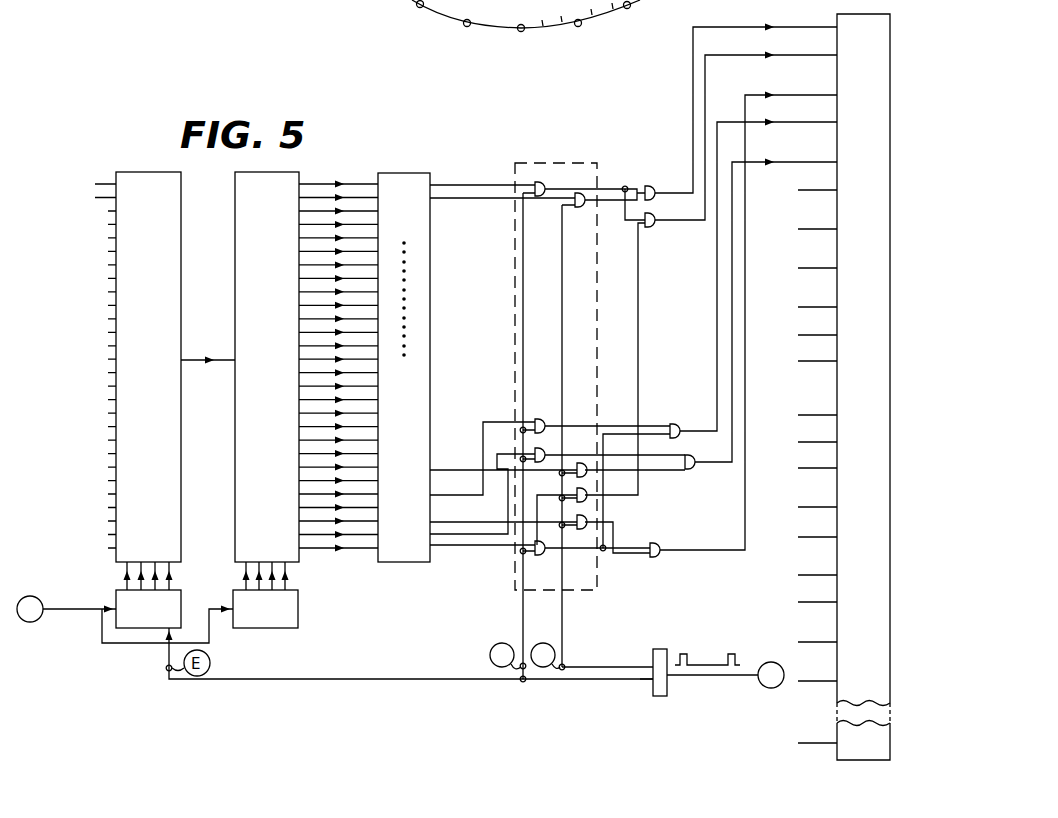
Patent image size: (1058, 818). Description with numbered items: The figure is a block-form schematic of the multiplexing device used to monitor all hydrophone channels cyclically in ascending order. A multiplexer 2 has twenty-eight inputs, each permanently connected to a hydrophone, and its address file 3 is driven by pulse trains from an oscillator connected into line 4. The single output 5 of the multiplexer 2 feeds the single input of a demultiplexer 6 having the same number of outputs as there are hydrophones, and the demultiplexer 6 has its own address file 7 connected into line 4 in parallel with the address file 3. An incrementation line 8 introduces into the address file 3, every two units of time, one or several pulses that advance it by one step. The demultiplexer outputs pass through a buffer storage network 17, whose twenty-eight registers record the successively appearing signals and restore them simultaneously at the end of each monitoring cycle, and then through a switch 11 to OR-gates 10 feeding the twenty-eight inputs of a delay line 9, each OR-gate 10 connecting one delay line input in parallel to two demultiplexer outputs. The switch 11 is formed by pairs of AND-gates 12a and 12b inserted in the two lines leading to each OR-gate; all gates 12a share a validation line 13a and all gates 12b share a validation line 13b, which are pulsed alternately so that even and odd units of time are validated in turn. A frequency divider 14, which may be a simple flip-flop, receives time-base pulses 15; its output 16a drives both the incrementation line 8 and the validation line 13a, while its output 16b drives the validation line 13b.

The multiplexer 2 is at (152, 361).
The address file 3 is at (154, 618).
The line 4 is at (64, 609).
The single output 5 is at (219, 357).
The demultiplexer 6 is at (272, 367).
The address file 7 is at (272, 611).
The incrementation line 8 is at (314, 679).
The delay line 9 is at (868, 361).
The OR-gate 10 is at (691, 291).
The switch 11 is at (515, 168).
The AND-gate 12a is at (532, 192).
The AND-gate 12b is at (583, 207).
The validation line 13a is at (520, 601).
The validation line 13b is at (563, 640).
The frequency divider 14 is at (659, 658).
The time-base pulses 15 is at (740, 665).
The output 16a is at (644, 680).
The output 16b is at (593, 667).
The buffer storage network 17 is at (420, 334).